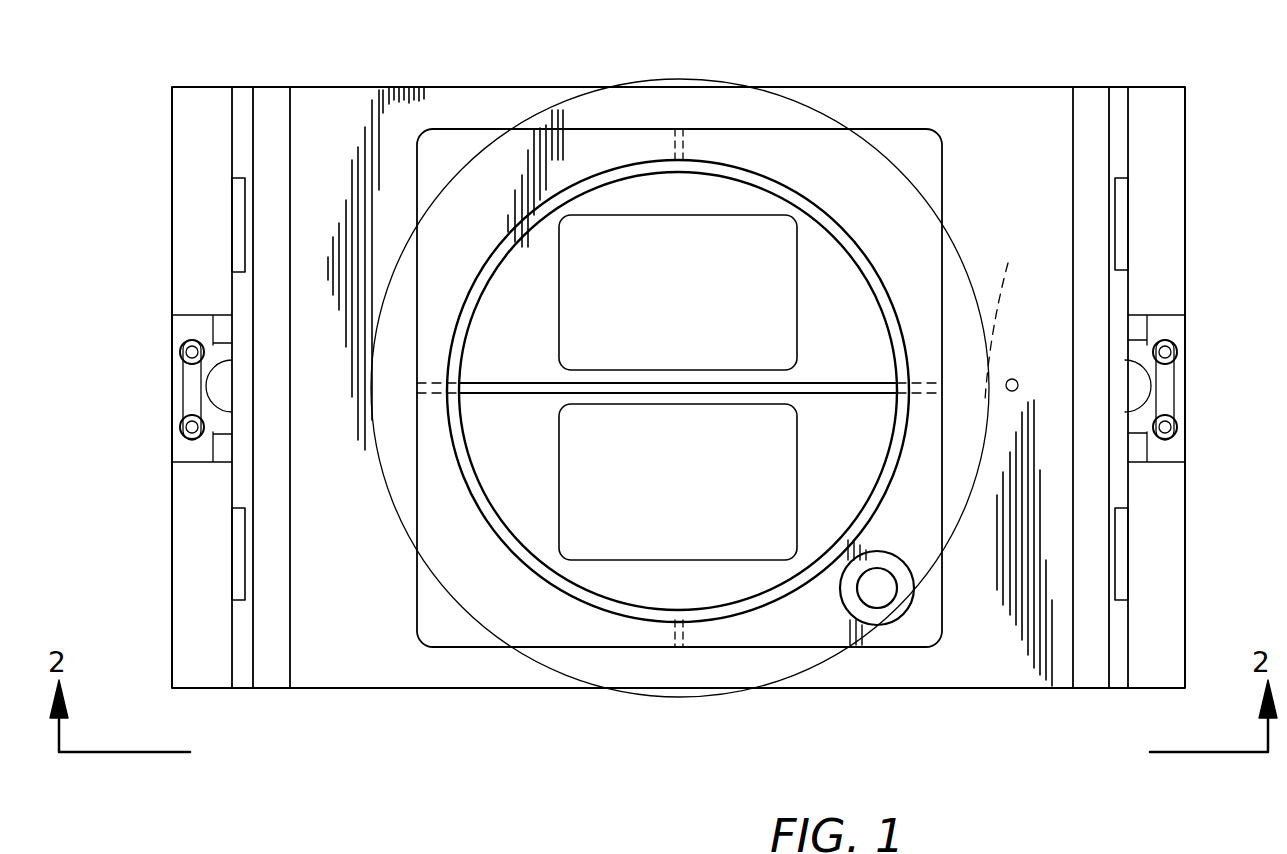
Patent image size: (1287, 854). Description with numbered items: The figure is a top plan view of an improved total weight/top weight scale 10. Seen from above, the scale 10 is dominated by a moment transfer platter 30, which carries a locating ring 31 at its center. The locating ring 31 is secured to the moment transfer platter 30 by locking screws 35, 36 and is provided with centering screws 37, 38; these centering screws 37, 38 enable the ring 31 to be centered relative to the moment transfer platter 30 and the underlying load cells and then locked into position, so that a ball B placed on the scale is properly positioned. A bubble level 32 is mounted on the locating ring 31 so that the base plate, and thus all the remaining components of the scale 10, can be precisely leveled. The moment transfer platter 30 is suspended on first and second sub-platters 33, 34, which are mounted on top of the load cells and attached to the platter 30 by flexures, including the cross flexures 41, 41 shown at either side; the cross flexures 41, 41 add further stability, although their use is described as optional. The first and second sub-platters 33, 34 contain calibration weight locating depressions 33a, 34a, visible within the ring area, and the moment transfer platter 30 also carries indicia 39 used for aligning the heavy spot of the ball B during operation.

The total weight/top weight scale 10 is at (906, 75).
The moment transfer platter 30 is at (990, 665).
The locating ring 31 is at (800, 190).
The bubble level 32 is at (885, 625).
The first sub-platter 33 is at (188, 502).
The calibration weight locating depression 33a is at (678, 482).
The second sub-platter 34 is at (838, 282).
The calibration weight locating depression 34a is at (678, 292).
The locking screw 35 is at (686, 152).
The locking screw 36 is at (690, 628).
The centering screw 37 is at (438, 383).
The centering screw 38 is at (925, 384).
The indicia 39 is at (1018, 381).
The cross flexure 41 is at (175, 392).
The ball B is at (541, 113).